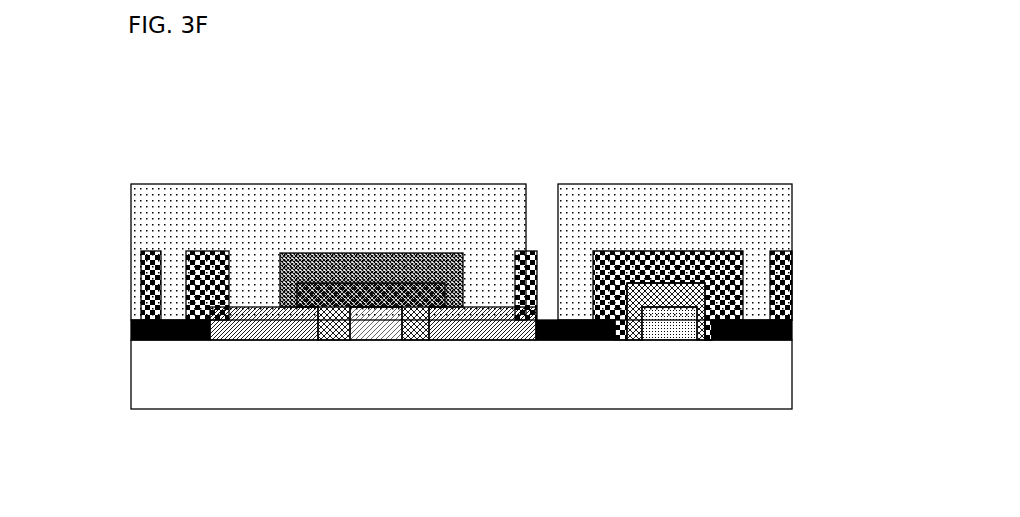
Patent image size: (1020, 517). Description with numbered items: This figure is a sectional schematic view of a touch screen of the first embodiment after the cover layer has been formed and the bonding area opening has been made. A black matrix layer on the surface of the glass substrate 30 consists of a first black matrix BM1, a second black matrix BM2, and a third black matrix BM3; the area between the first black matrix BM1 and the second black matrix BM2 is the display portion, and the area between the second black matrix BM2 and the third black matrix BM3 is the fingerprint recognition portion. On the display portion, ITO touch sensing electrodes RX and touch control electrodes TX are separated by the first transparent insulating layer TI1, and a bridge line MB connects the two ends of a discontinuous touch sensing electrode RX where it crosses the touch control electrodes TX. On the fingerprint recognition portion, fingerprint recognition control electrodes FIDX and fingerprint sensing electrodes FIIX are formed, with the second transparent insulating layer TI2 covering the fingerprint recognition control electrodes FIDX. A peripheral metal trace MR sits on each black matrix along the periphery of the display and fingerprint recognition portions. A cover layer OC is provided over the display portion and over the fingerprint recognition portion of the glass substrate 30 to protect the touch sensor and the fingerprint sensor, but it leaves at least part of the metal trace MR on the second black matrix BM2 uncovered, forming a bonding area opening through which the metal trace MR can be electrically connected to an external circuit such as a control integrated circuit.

The glass substrate 30 is at (802, 379).
The cover layer OC is at (162, 175).
The peripheral metal trace MR is at (770, 242).
The bridge line MB is at (339, 242).
The first transparent insulating layer TI1 is at (340, 349).
The second transparent insulating layer TI2 is at (639, 349).
The touch control electrode TX is at (392, 349).
The touch sensing electrode RX is at (262, 349).
The first black matrix BM1 is at (121, 335).
The second black matrix BM2 is at (584, 349).
The third black matrix BM3 is at (802, 334).
The fingerprint recognition control electrode FIDX is at (694, 349).
The fingerprint sensing electrode FIIX is at (740, 342).